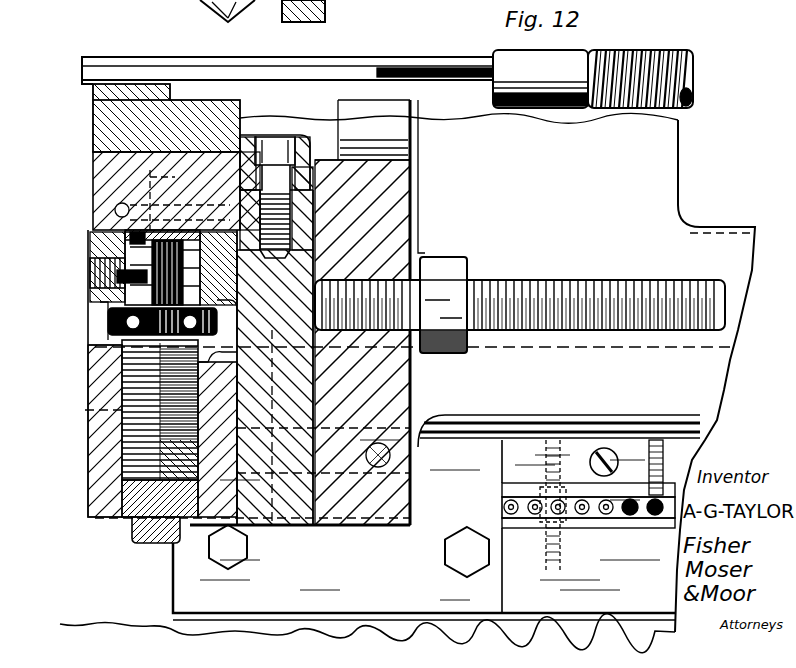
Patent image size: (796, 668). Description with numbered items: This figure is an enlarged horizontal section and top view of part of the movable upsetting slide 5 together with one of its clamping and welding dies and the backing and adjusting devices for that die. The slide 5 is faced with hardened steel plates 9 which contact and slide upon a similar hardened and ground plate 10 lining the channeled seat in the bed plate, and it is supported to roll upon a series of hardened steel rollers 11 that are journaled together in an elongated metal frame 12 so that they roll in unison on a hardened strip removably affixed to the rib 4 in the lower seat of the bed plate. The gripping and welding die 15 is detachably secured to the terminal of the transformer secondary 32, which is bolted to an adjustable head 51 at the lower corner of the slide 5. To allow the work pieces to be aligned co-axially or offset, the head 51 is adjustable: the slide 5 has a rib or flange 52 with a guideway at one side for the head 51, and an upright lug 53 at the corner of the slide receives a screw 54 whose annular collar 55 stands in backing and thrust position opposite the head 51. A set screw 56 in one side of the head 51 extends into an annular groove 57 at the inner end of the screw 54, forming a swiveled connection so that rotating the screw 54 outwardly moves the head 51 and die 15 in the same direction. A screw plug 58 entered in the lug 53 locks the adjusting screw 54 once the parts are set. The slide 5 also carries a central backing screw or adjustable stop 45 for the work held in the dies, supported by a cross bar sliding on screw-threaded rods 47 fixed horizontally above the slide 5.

The rib 4 is at (380, 534).
The reciprocable upsetting slide 5 is at (680, 172).
The hardened steel plates 9 is at (660, 467).
The hardened and ground plate 10 is at (626, 522).
The hardened steel rollers 11 is at (619, 466).
The elongated metal frame 12 is at (568, 490).
The gripping and welding die 15 is at (93, 121).
The secondary 32 is at (93, 183).
The central backing screw or adjustable stop 45 is at (693, 82).
The screw-threaded rods 47 is at (575, 268).
The adjustable head 51 is at (125, 243).
The rib or flange 52 is at (410, 213).
The upright lug 53 is at (88, 378).
The screw 54 is at (122, 348).
The annular collar 55 is at (108, 318).
The set screw 56 is at (90, 268).
The annular groove 57 is at (117, 283).
The screw plug 58 is at (132, 517).